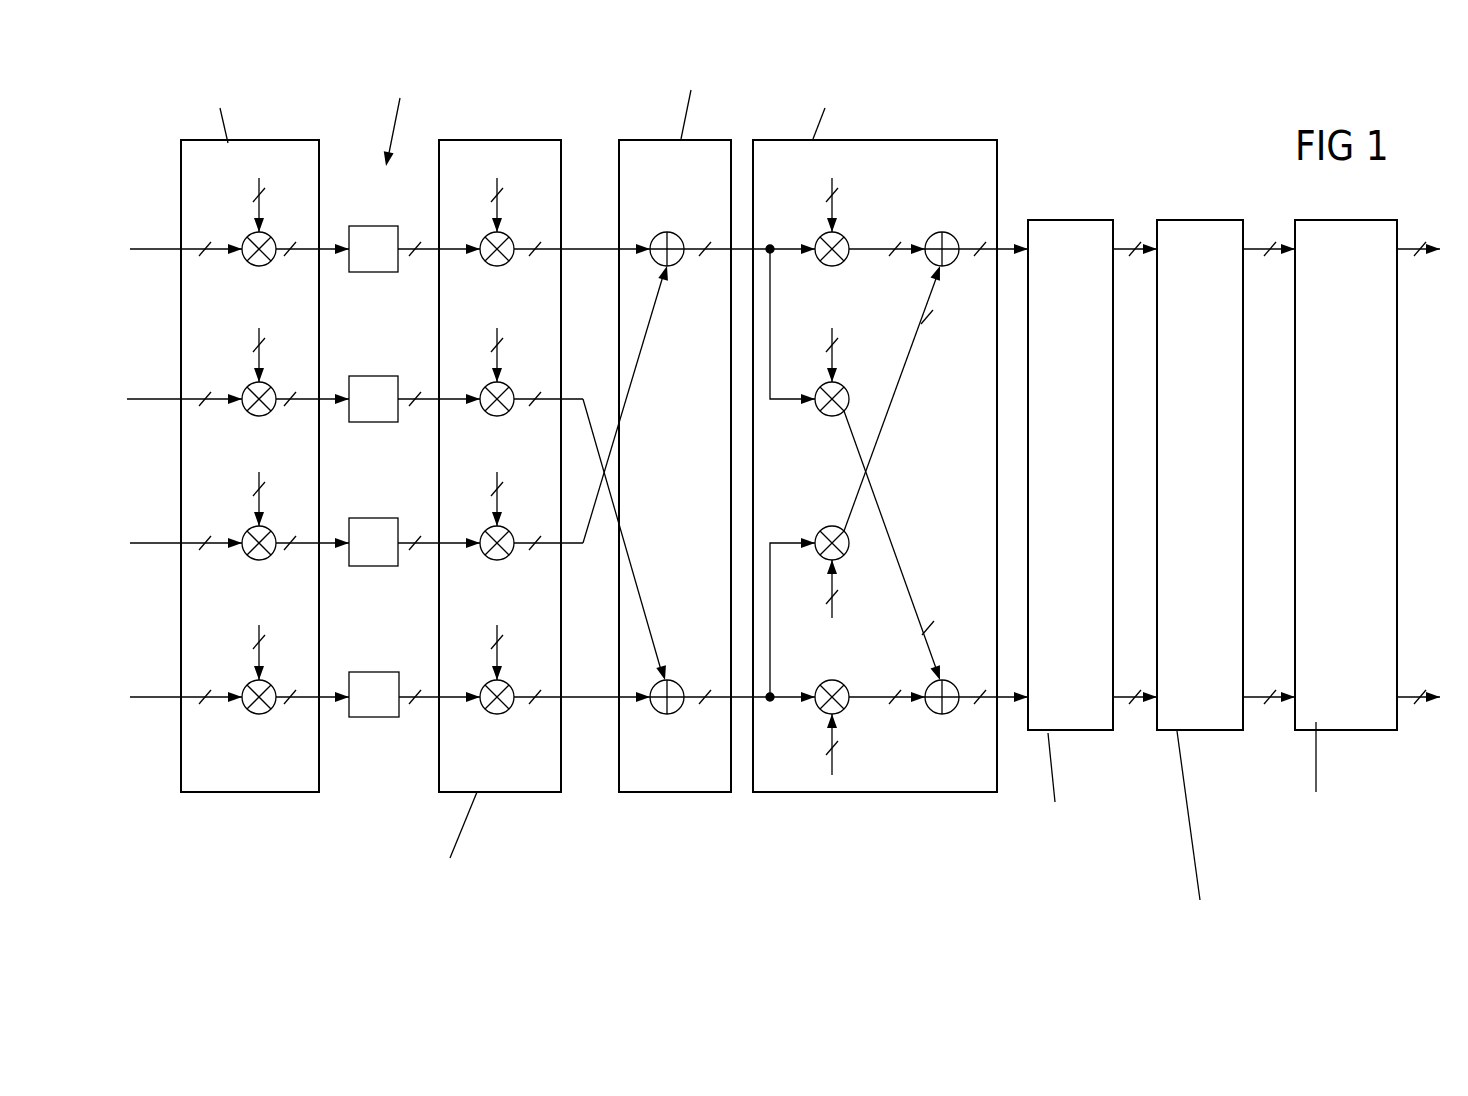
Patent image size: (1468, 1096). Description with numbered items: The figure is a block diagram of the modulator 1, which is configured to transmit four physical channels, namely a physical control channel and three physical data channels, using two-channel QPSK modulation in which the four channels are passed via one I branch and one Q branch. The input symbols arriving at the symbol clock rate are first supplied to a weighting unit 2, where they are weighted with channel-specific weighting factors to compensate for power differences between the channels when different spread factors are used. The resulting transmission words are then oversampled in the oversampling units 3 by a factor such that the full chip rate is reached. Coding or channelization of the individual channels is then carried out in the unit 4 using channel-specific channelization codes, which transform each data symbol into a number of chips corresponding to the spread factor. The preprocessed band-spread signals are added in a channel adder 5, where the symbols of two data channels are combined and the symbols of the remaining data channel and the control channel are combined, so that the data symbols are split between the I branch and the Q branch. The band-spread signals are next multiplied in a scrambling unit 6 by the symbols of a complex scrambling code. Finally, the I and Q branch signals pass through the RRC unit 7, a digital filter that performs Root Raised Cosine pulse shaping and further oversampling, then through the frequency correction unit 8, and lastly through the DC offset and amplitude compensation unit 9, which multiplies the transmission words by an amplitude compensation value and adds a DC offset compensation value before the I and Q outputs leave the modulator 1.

The modulator 1 is at (1118, 180).
The weighting unit 2 is at (244, 782).
The oversampling units 3 is at (374, 272).
The unit with channelization codes 4 is at (500, 782).
The channel adder 5 is at (672, 782).
The scrambling unit 6 is at (902, 782).
The RRC unit 7 is at (1072, 722).
The frequency correction unit 8 is at (1213, 722).
The DC offset and amplitude compensation unit 9 is at (1352, 722).